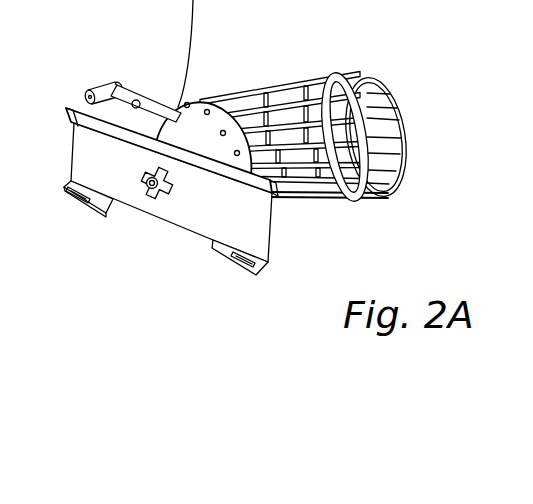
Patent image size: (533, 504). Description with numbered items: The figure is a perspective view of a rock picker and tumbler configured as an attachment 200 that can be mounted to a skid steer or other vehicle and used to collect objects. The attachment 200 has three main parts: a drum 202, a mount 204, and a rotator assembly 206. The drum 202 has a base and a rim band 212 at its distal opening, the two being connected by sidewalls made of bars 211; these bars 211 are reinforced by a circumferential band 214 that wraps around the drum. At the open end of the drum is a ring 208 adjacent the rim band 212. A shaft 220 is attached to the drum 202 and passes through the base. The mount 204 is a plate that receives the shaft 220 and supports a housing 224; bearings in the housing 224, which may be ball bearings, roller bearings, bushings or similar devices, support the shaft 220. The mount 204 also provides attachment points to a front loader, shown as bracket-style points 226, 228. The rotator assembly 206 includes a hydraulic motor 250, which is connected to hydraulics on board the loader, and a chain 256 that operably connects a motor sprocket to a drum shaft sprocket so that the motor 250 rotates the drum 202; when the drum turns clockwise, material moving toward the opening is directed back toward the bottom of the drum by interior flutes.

The attachment 200 is at (268, 162).
The drum 202 is at (335, 132).
The mount 204 is at (155, 195).
The rotator assembly 206 is at (120, 83).
The end ring 208 is at (431, 147).
The bars 211 is at (386, 128).
The rim band 212 is at (402, 107).
The circumferential band 214 is at (325, 80).
The shaft 220 is at (140, 182).
The housing 224 is at (170, 192).
The bracket-style attachment point 226 is at (268, 258).
The bracket-style attachment point 228 is at (297, 207).
The hydraulic motor 250 is at (100, 90).
The chain 256 is at (138, 100).